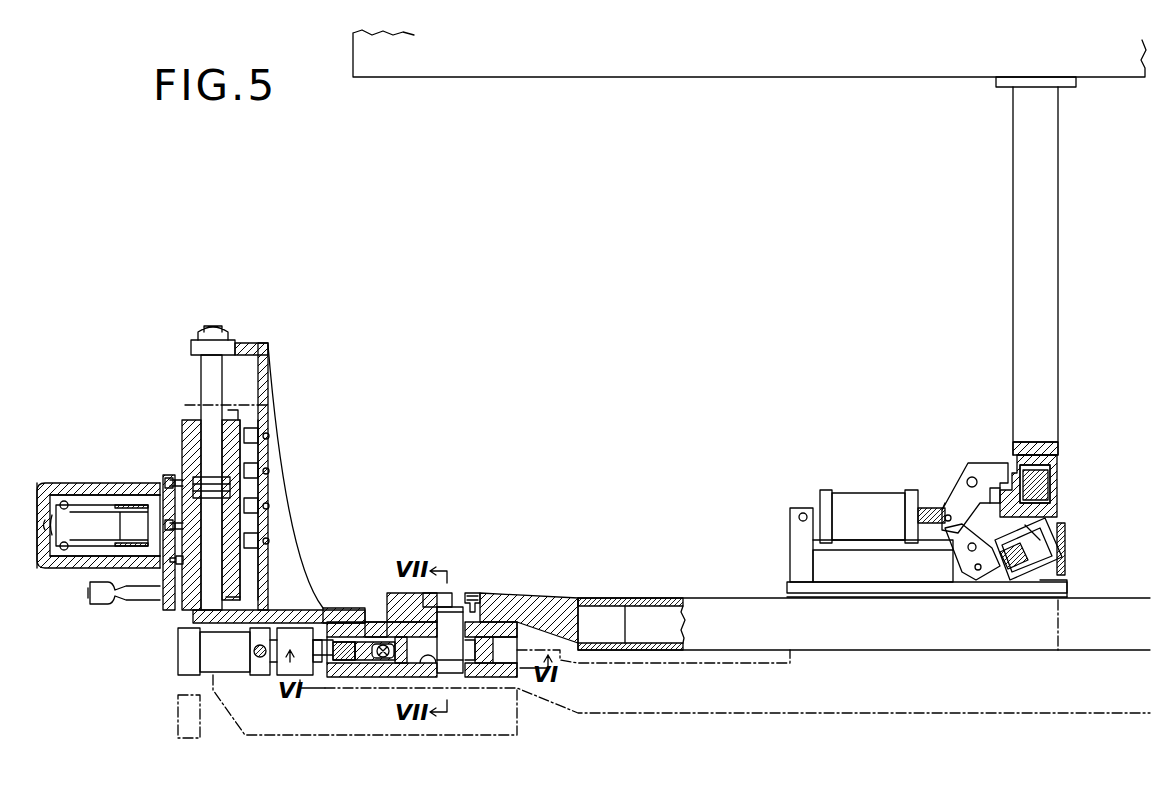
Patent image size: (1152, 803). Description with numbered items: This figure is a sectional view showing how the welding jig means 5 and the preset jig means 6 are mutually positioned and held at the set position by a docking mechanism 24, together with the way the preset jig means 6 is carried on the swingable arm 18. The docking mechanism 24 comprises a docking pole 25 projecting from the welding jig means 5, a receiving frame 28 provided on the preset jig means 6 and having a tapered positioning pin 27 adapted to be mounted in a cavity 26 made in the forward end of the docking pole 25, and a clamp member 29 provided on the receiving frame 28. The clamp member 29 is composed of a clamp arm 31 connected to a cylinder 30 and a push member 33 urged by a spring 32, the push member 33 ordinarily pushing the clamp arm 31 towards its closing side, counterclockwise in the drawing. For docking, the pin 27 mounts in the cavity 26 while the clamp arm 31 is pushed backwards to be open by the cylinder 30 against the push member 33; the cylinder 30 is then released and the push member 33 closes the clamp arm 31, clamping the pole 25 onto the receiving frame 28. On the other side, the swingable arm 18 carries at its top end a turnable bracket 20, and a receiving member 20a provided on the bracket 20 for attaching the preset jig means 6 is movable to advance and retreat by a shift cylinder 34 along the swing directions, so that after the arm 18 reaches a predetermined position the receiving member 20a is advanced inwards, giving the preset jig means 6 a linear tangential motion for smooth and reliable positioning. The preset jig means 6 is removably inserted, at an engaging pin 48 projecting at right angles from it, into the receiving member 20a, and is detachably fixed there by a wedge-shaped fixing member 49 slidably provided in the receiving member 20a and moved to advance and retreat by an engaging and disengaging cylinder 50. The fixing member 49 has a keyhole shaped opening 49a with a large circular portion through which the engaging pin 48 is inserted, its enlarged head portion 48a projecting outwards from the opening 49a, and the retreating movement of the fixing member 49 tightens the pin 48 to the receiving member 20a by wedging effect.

The welding jig means 5 is at (752, 68).
The preset jig means 6 is at (858, 652).
The swingable arm 18 is at (116, 484).
The bracket 20 is at (171, 600).
The receiving member 20a is at (347, 606).
The docking mechanism 24 is at (1074, 511).
The docking pole 25 is at (1030, 292).
The cavity 26 is at (1052, 490).
The tapered positioning pin 27 is at (1056, 495).
The receiving frame 28 is at (1050, 576).
The clamp member 29 is at (939, 463).
The cylinder 30 is at (858, 492).
The clamp arm 31 is at (988, 463).
The spring 32 is at (1025, 572).
The push member 33 is at (960, 548).
The shift cylinder 34 is at (193, 482).
The engaging pin 48 is at (454, 604).
The enlarged head portion 48a is at (451, 668).
The fixing member 49 is at (492, 640).
The keyhole shaped opening 49a is at (465, 662).
The engaging and disengaging cylinder 50 is at (186, 656).